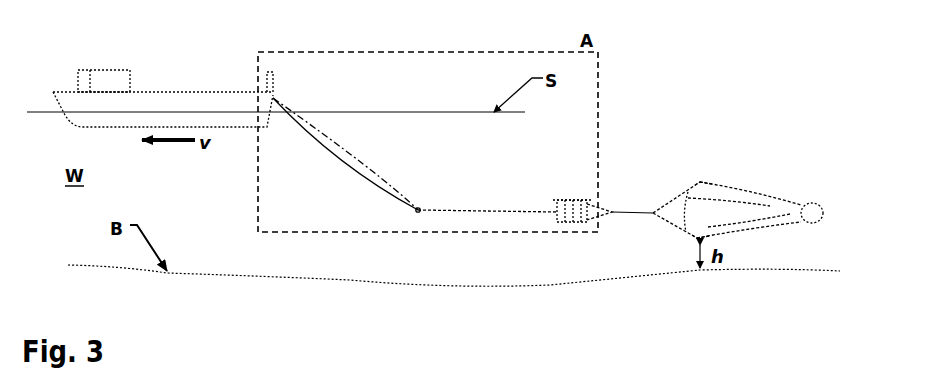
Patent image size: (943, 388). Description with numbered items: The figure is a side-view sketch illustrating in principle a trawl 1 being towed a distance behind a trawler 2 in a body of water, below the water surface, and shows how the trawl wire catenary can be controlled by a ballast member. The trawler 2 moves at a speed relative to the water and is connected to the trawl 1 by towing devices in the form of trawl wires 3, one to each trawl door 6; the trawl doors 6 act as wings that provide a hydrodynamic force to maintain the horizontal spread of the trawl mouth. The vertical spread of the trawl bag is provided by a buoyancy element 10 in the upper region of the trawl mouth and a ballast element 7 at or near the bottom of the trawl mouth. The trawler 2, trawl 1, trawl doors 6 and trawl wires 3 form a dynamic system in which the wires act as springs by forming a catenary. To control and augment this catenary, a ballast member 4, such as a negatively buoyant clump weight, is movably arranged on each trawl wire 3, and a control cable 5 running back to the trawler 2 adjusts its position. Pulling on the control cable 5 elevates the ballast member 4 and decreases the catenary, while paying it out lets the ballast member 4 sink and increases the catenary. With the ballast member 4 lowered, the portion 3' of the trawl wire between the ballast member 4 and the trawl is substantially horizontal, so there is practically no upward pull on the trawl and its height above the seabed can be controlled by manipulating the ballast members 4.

The trawl 1 is at (722, 198).
The trawler 2 is at (163, 73).
The trawl wire 3 is at (345, 160).
The portion of the towing member 3' is at (487, 243).
The ballast member 4 is at (387, 233).
The control cable 5 is at (354, 154).
The trawl door 6 is at (555, 193).
The ballast element 7 is at (662, 255).
The buoyancy element 10 is at (662, 154).